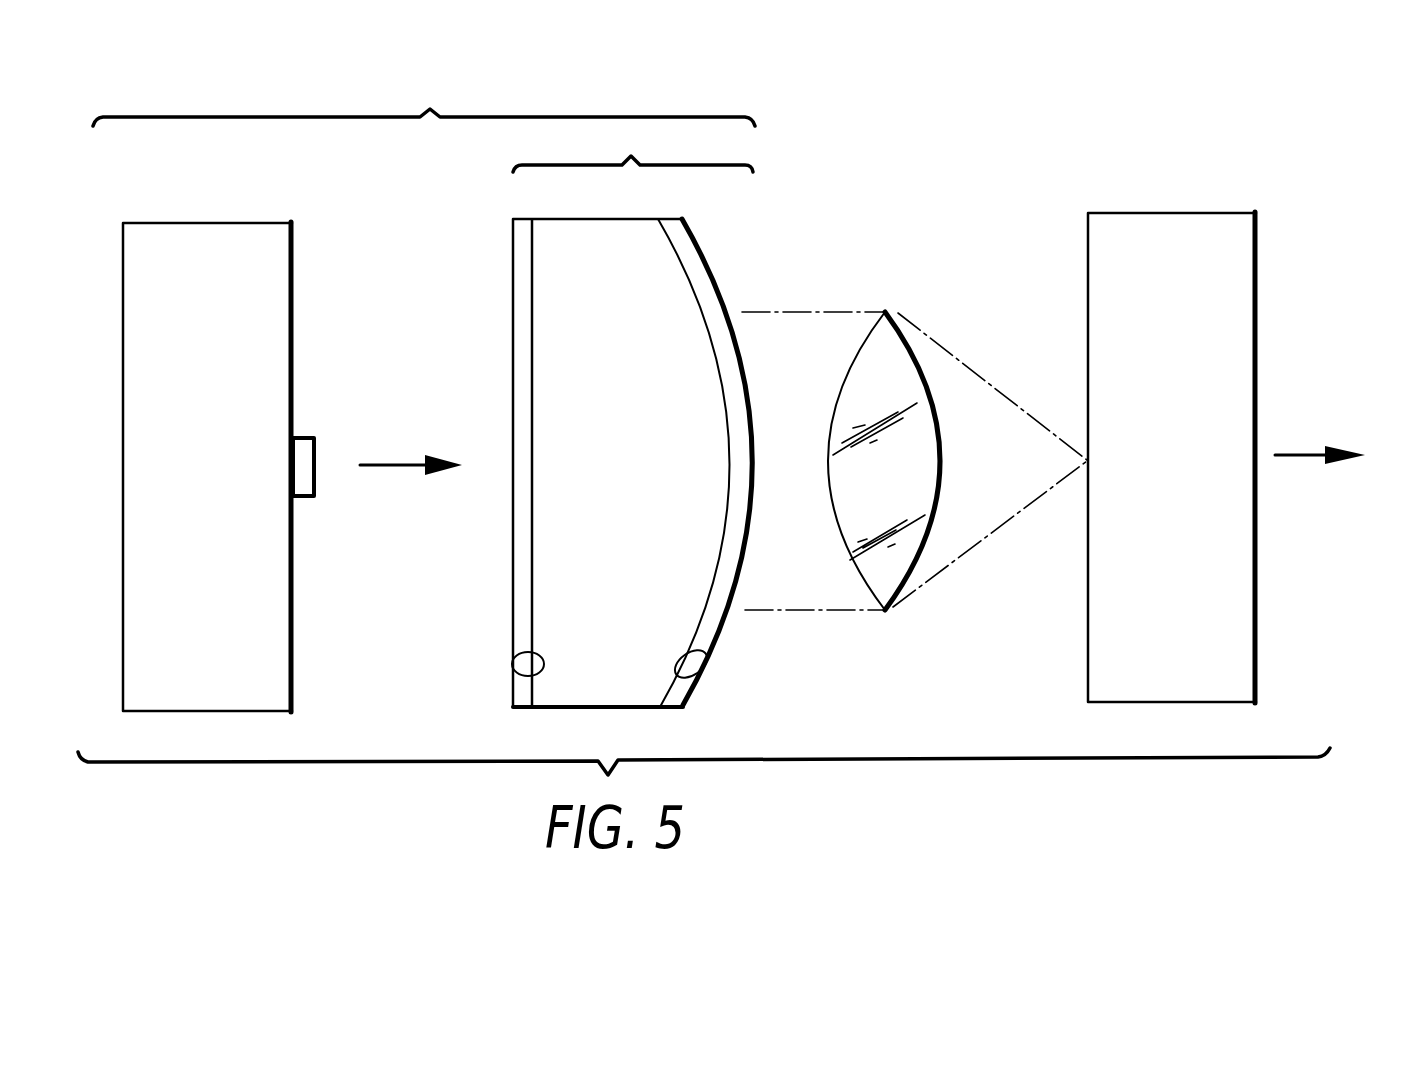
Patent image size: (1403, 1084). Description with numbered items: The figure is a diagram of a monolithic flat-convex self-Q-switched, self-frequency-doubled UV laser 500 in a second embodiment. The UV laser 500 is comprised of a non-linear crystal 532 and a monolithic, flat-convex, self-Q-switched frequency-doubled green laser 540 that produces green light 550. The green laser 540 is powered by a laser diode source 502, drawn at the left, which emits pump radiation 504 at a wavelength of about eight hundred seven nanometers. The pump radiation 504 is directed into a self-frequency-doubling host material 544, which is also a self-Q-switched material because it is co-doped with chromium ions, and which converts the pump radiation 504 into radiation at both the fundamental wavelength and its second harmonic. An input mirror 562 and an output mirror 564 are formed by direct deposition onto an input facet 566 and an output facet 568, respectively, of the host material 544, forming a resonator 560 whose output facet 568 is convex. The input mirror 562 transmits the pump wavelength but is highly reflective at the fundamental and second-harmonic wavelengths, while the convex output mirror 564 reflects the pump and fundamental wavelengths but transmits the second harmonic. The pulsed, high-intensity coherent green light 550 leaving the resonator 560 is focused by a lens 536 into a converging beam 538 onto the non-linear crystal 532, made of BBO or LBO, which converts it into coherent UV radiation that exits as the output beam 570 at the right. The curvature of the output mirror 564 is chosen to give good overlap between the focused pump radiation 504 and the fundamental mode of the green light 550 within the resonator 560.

The UV laser 500 is at (1047, 98).
The laser diode source 502 is at (206, 222).
The pump radiation 504 is at (405, 460).
The non-linear crystal 532 is at (1155, 213).
The lens 536 is at (888, 312).
The converging beam 538 is at (1000, 392).
The green laser 540 is at (424, 101).
The self-frequency-doubling host material 544 is at (621, 444).
The green light 550 is at (768, 312).
The resonator 560 is at (633, 149).
The input mirror 562 is at (527, 676).
The output mirror 564 is at (697, 681).
The input facet 566 is at (531, 628).
The output facet 568 is at (705, 636).
The output beam 570 is at (1318, 419).